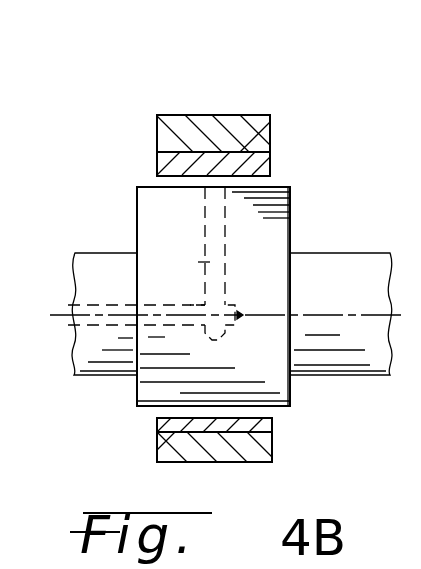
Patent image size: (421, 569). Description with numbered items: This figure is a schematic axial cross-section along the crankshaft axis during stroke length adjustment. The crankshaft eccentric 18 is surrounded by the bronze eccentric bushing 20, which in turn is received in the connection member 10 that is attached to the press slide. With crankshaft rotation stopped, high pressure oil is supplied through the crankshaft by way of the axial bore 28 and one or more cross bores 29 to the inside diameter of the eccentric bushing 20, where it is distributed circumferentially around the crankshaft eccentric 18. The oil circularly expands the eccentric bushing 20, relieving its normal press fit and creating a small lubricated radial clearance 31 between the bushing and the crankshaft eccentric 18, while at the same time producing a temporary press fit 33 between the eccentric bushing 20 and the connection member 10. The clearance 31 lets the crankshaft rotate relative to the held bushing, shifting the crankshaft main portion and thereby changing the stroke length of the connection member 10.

The connection member 10 is at (208, 120).
The crankshaft eccentric 18 is at (293, 228).
The eccentric bushing 20 is at (265, 163).
The axial bore 28 is at (100, 322).
The cross bore 29 is at (204, 262).
The radial clearance 31 is at (222, 185).
The temporary press fit 33 is at (250, 150).